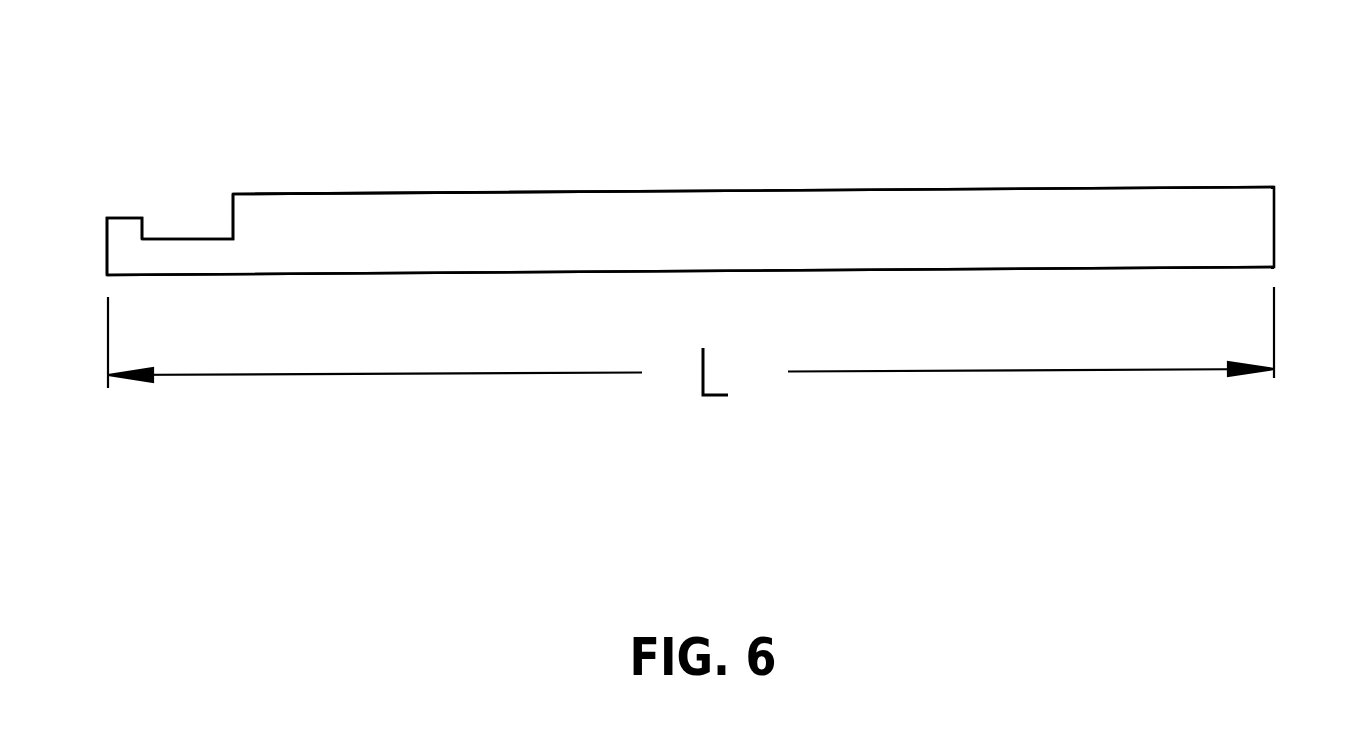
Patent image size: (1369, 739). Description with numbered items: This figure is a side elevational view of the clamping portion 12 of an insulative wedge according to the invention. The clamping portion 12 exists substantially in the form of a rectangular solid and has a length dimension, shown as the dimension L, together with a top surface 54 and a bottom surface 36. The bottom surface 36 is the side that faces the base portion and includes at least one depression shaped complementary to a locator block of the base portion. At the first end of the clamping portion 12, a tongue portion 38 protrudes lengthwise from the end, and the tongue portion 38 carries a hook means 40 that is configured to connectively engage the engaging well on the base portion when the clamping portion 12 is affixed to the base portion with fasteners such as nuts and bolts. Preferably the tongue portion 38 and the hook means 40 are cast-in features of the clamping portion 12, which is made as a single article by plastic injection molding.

The clamping portion 12 is at (727, 197).
The bottom surface 36 is at (978, 188).
The tongue portion 38 is at (177, 253).
The hook means 40 is at (126, 217).
The top surface 54 is at (1193, 267).